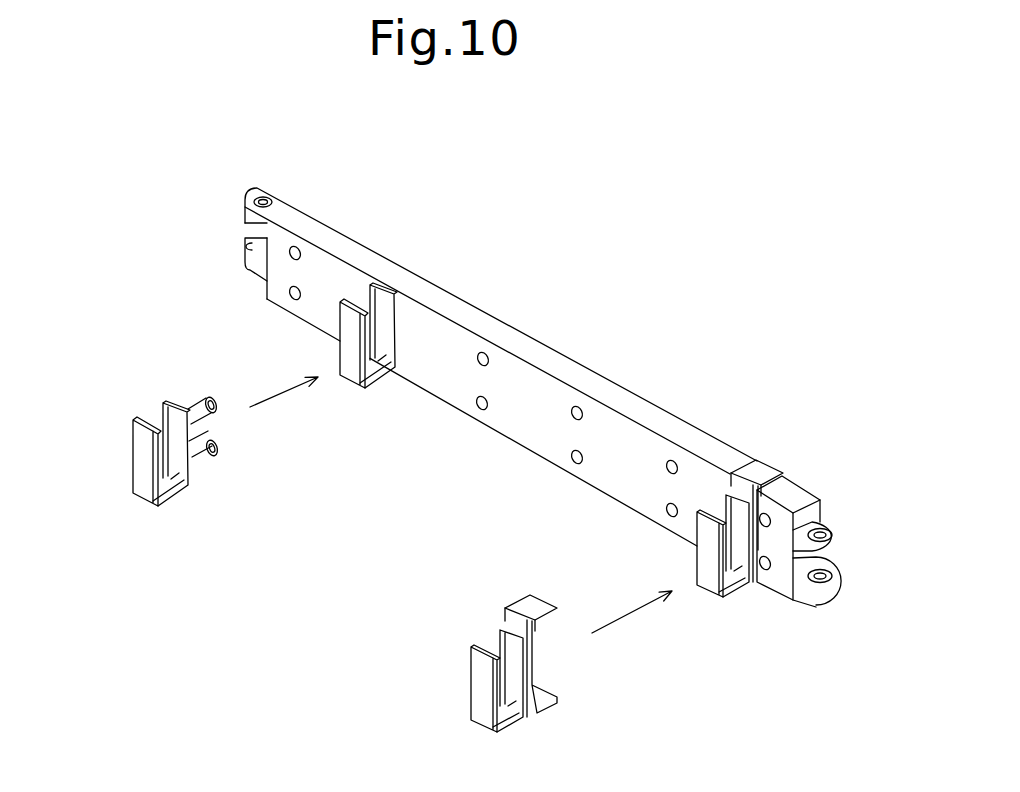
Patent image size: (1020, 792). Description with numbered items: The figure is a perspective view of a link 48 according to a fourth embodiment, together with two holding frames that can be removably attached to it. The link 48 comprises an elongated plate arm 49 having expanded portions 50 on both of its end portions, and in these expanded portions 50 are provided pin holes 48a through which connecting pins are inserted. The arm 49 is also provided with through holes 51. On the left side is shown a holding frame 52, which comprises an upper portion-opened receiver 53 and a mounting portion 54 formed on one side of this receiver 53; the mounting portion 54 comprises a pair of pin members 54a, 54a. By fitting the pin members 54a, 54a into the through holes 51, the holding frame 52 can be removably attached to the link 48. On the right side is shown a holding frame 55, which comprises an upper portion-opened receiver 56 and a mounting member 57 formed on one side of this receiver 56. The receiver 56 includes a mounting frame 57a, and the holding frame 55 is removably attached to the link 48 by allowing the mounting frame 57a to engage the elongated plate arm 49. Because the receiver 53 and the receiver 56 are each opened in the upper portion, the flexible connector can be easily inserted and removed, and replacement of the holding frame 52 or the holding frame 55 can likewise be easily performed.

The link 48 is at (574, 330).
The pin hole 48a is at (266, 200).
The elongated plate arm 49 is at (421, 284).
The expanded portion 50 is at (250, 218).
The through hole 51 is at (483, 357).
The holding frame 52 is at (112, 431).
The receiver 53 is at (143, 475).
The mounting portion 54 is at (170, 382).
The pin member 54a is at (200, 410).
The holding frame 55 is at (443, 654).
The receiver 56 is at (478, 703).
The mounting member 57 is at (497, 586).
The mounting frame 57a is at (536, 600).